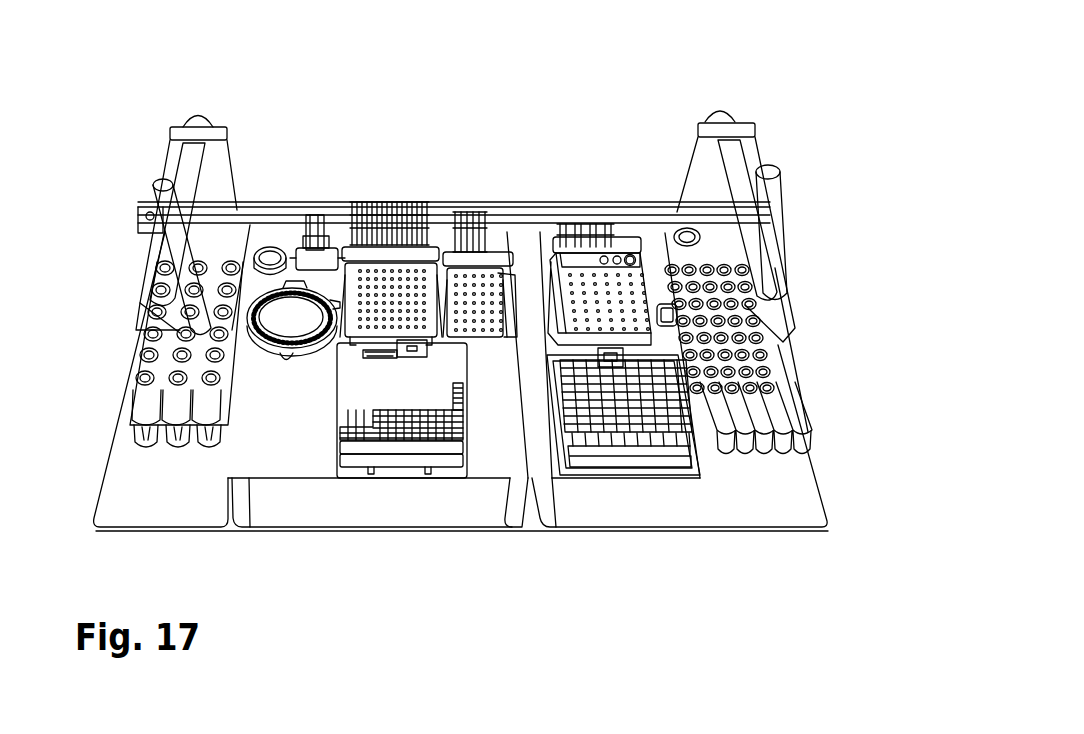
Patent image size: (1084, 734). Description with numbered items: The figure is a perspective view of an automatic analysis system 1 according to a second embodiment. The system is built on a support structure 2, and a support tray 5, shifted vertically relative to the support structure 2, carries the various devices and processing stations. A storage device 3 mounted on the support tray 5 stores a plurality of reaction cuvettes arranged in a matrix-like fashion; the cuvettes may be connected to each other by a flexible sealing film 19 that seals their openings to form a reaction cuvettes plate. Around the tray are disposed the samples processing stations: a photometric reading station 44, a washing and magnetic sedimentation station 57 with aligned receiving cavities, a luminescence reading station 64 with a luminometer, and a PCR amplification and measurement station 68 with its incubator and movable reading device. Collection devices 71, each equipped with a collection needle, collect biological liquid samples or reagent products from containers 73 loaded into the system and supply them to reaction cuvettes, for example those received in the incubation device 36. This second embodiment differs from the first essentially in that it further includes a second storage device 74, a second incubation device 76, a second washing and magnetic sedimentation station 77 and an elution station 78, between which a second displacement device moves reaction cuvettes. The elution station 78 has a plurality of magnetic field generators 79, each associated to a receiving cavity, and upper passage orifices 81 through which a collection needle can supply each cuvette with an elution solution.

The automatic analysis system 1 is at (508, 136).
The support structure 2 is at (178, 490).
The storage device 3 is at (400, 468).
The support tray 5 is at (280, 460).
The flexible sealing film 19 is at (347, 400).
The incubation device 36 is at (393, 270).
The photometric reading station 44 is at (264, 297).
The washing and magnetic sedimentation station 57 is at (395, 201).
The luminescence reading station 64 is at (321, 220).
The PCR amplification and measurement station 68 is at (469, 201).
The collection device 71 is at (210, 197).
The containers 73 is at (142, 350).
The second storage device 74 is at (620, 437).
The second incubation device 76 is at (648, 300).
The second washing and magnetic sedimentation station 77 is at (565, 225).
The elution station 78 is at (618, 245).
The magnetic field generator 79 is at (637, 262).
The upper passage orifices 81 is at (605, 240).